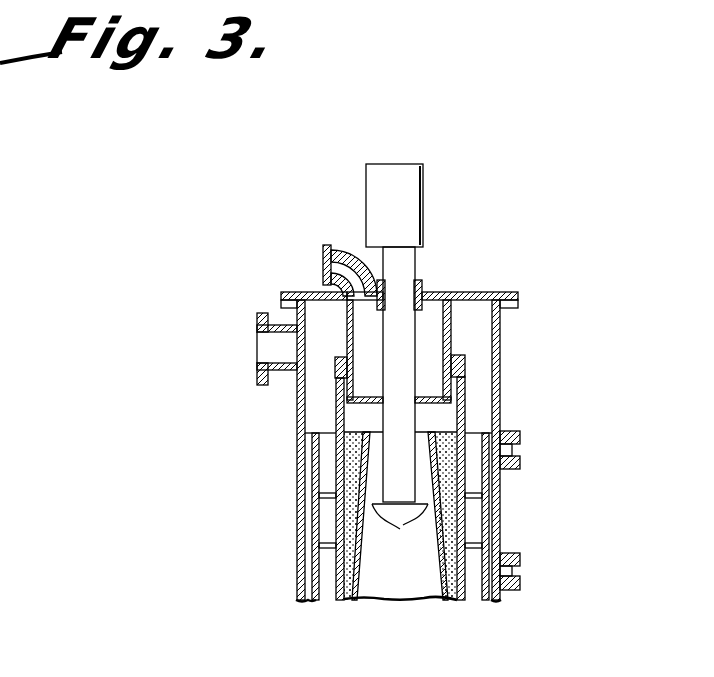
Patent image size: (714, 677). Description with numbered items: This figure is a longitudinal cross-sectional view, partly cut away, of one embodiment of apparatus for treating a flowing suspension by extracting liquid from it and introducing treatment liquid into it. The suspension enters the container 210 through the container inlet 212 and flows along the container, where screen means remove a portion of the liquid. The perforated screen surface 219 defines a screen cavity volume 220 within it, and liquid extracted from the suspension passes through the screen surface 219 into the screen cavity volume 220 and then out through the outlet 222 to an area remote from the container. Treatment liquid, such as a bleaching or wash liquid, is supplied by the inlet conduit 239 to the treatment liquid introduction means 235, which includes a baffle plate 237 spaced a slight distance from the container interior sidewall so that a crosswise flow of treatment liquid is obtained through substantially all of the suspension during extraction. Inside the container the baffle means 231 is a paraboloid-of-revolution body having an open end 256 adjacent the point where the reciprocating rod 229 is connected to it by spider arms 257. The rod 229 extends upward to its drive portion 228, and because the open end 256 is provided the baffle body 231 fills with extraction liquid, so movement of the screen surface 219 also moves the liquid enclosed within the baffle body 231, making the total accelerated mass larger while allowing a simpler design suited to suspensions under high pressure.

The container 210 is at (300, 431).
The container inlet 212 is at (256, 313).
The screen surface 219 is at (345, 520).
The screen cavity volume 220 is at (372, 421).
The outlet 222 is at (335, 280).
The reciprocating rod drive 228 is at (410, 195).
The reciprocating rod 229 is at (405, 270).
The baffle means 231 is at (366, 603).
The treatment liquid introduction means 235 is at (515, 598).
The baffle plate 237 is at (487, 485).
The treatment liquid inlet conduit 239 is at (520, 438).
The open end 256 is at (430, 432).
The spider arms 257 is at (407, 536).